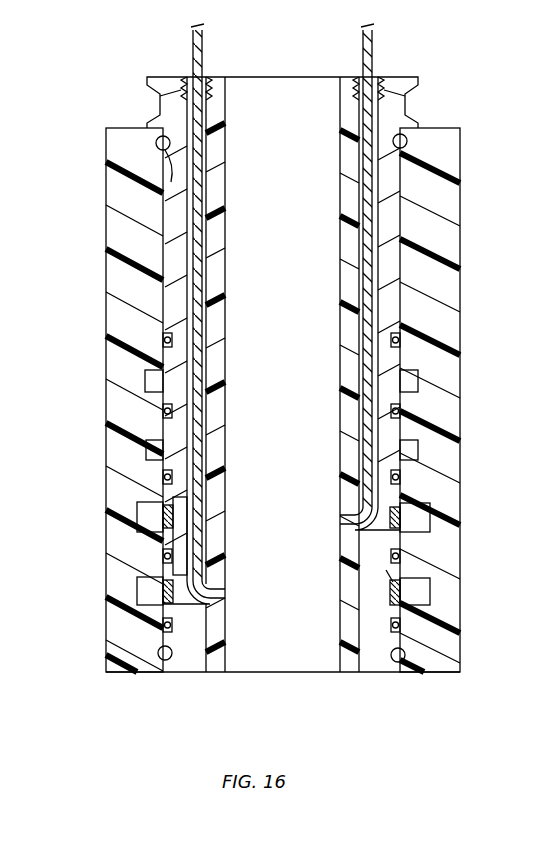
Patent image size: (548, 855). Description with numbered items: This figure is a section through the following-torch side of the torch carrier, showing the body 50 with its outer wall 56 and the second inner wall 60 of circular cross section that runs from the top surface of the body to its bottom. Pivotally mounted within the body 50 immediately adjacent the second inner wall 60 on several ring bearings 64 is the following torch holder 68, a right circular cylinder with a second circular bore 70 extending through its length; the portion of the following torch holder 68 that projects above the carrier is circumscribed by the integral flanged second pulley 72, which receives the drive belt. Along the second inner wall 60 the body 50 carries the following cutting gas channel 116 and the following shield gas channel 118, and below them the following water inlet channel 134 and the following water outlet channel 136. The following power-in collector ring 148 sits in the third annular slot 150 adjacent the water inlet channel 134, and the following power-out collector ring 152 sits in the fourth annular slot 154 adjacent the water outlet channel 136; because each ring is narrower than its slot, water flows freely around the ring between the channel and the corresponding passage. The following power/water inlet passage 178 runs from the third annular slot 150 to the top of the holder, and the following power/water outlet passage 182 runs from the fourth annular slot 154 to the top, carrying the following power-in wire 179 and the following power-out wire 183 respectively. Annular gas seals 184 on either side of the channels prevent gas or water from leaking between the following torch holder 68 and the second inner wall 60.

The body 50 is at (120, 190).
The outer wall 56 is at (460, 157).
The second inner wall 60 is at (165, 185).
The ring bearings 64 is at (157, 138).
The following torch holder 68 is at (375, 676).
The second circular bore 70 is at (283, 662).
The second pulley 72 is at (404, 94).
The following cutting gas channel 116 is at (147, 380).
The following shield gas channel 118 is at (147, 452).
The following water inlet channel 134 is at (140, 510).
The following water outlet channel 136 is at (140, 585).
The following power-in collector ring 148 is at (174, 516).
The third annular slot 150 is at (173, 503).
The following power-out collector ring 152 is at (163, 592).
The fourth annular slot 154 is at (393, 582).
The following power/water inlet passage 178 is at (380, 232).
The following power-in wire 179 is at (370, 36).
The following power/water outlet passage 182 is at (183, 265).
The following power-out wire 183 is at (200, 36).
The annular gas seals 184 is at (165, 338).